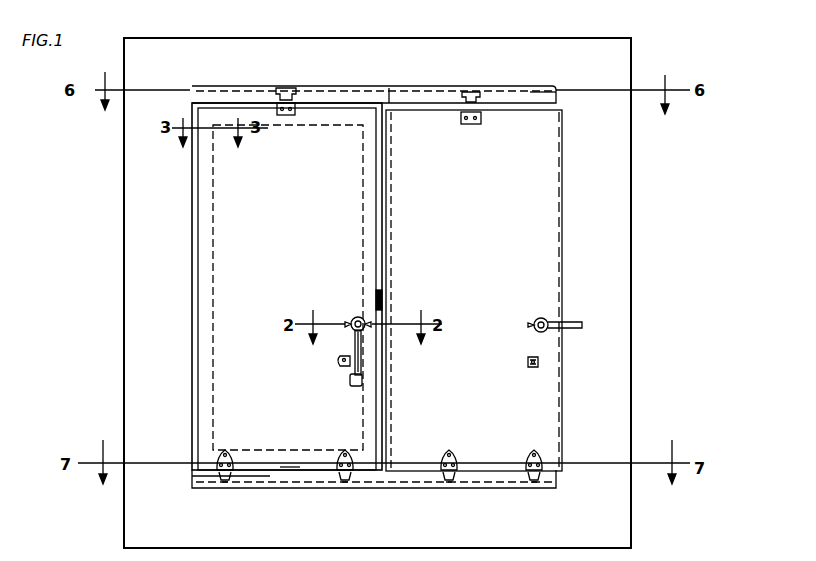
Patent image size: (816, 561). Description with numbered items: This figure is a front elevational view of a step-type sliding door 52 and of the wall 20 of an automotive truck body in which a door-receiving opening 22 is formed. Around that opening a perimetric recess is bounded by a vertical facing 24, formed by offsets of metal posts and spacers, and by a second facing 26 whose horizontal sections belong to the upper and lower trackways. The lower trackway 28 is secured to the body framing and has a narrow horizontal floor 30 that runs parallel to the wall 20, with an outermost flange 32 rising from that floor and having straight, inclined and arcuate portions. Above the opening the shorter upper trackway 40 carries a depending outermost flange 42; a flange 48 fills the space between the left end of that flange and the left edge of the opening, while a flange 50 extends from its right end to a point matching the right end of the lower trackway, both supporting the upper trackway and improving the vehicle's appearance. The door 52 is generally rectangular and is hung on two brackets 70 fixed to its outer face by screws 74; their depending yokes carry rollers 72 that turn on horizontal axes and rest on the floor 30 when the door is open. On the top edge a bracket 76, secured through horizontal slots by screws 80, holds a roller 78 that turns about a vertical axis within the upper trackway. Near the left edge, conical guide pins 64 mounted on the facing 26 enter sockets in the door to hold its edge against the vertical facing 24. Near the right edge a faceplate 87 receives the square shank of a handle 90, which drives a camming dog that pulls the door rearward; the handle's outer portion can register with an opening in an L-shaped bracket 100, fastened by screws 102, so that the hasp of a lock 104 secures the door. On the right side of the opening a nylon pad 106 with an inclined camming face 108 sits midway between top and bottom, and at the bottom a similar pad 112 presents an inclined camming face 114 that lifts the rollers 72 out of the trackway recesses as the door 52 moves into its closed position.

The wall 20 is at (608, 222).
The door-receiving opening 22 is at (216, 276).
The vertical facing 24 is at (206, 346).
The second facing 26 is at (330, 182).
The lower trackway 28 is at (453, 490).
The floor 30 is at (322, 474).
The outermost flange 32 is at (252, 484).
The upper trackway 40 is at (462, 82).
The outermost flange 42 is at (389, 90).
The flange 48 is at (216, 66).
The flange 50 is at (530, 97).
The door 52 is at (222, 365).
The guide pins 64 is at (202, 165).
The brackets 70 is at (228, 450).
The rollers 72 is at (215, 488).
The screws 74 is at (238, 462).
The bracket 76 is at (292, 115).
The roller 78 is at (302, 88).
The screws 80 is at (280, 115).
The faceplate 87 is at (351, 319).
The handle 90 is at (352, 343).
The L-shaped bracket 100 is at (340, 368).
The screws 102 is at (338, 361).
The lock 104 is at (354, 387).
The pad 106 is at (392, 283).
The inclined camming face 108 is at (375, 292).
The pad 112 is at (291, 478).
The inclined camming face 114 is at (285, 466).